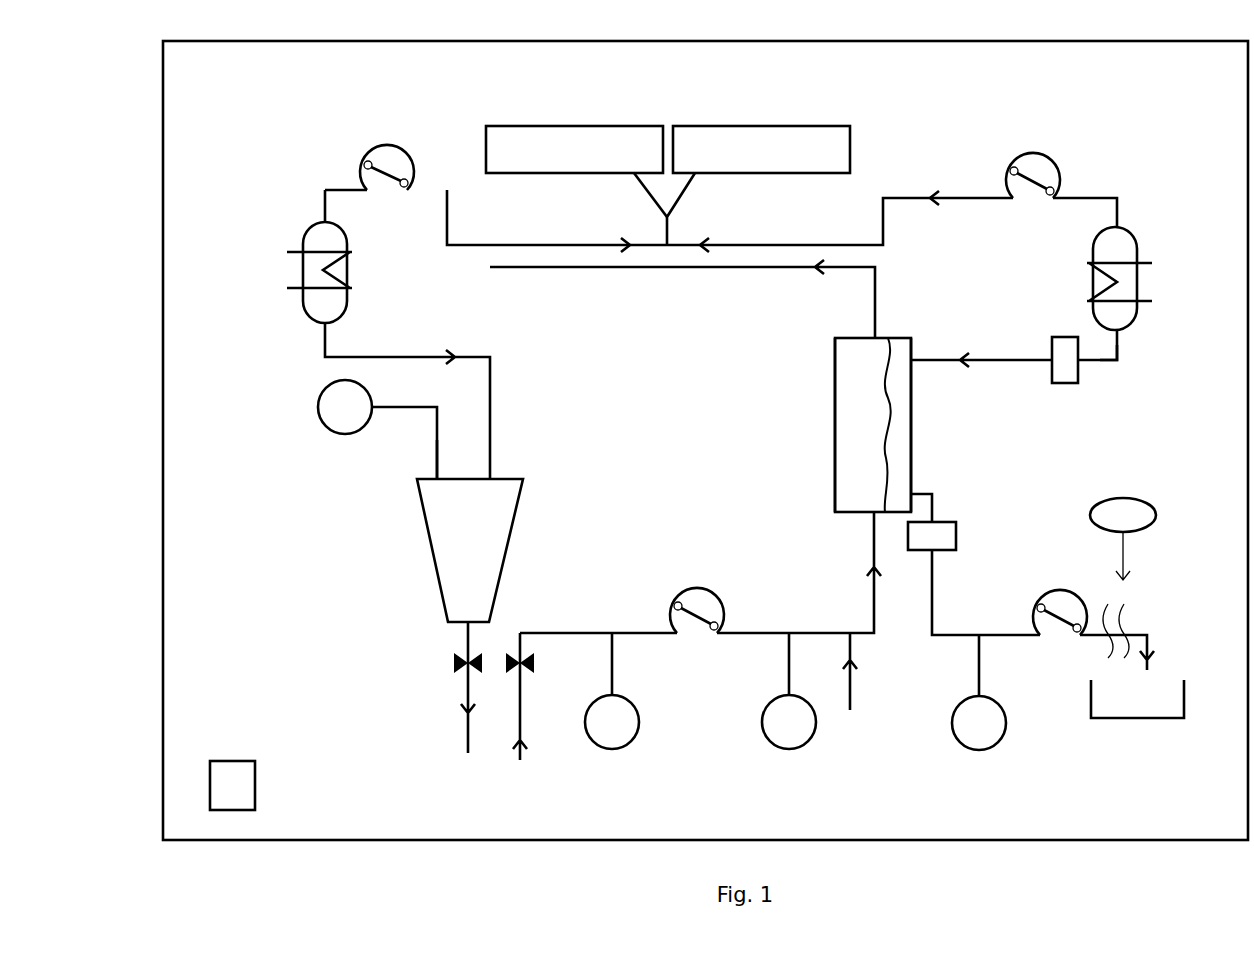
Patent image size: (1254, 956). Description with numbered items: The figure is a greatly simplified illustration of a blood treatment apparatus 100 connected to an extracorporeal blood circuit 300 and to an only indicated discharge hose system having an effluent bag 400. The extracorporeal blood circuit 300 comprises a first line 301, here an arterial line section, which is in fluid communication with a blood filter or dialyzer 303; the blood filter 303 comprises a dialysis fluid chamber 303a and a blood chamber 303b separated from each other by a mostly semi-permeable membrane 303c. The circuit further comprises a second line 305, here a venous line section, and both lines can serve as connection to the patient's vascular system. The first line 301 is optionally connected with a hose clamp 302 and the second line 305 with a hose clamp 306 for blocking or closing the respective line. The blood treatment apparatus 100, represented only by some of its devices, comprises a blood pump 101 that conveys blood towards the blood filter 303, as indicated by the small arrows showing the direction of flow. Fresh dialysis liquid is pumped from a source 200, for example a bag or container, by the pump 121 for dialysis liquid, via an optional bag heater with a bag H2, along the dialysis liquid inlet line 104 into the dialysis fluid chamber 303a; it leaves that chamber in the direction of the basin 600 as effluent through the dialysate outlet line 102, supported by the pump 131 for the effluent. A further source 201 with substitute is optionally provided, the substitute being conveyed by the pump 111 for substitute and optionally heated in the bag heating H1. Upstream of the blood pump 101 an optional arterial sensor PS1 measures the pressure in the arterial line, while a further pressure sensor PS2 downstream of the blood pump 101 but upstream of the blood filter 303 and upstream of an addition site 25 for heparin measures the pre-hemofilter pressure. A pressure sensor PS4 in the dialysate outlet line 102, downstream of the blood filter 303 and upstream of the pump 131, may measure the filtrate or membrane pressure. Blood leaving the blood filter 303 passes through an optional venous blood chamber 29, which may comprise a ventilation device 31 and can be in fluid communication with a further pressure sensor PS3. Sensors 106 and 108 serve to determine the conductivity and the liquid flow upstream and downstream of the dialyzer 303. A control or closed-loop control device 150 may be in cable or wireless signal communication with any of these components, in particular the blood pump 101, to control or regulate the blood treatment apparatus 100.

The blood treatment apparatus 100 is at (163, 395).
The pump for substitute 111 is at (380, 150).
The pump for dialysis liquid 121 is at (1060, 172).
The source with substitute 201 is at (576, 171).
The source 200 is at (758, 185).
The bag heating H1 is at (303, 272).
The bag heater with a bag H2 is at (1132, 278).
The dialysis liquid inlet line 104 is at (1117, 360).
The sensor 106 is at (1063, 337).
The second line 305 is at (542, 267).
The extracorporeal blood circuit 300 is at (650, 413).
The blood filter or dialyzer 303 is at (868, 418).
The dialysis fluid chamber 303a is at (900, 450).
The blood chamber 303b is at (855, 460).
The semi-permeable membrane 303c is at (888, 392).
The sensor 108 is at (950, 522).
The dialysate outlet line 102 is at (933, 612).
The pump for the effluent 131 is at (1063, 590).
The effluent bag 400 is at (1123, 539).
The basin 600 is at (1135, 705).
The arterial sensor PS1 is at (612, 707).
The pressure sensor PS2 is at (789, 707).
The pressure sensor PS3 is at (377, 429).
The pressure sensor PS4 is at (979, 708).
The first line 301 is at (558, 633).
The blood pump 101 is at (718, 600).
The addition site for heparin 25 is at (851, 688).
The hose clamp 302 is at (533, 663).
The ventilation device 31 is at (437, 455).
The venous blood chamber 29 is at (450, 527).
The hose clamp 306 is at (452, 660).
The control or closed-loop control device 150 is at (235, 790).